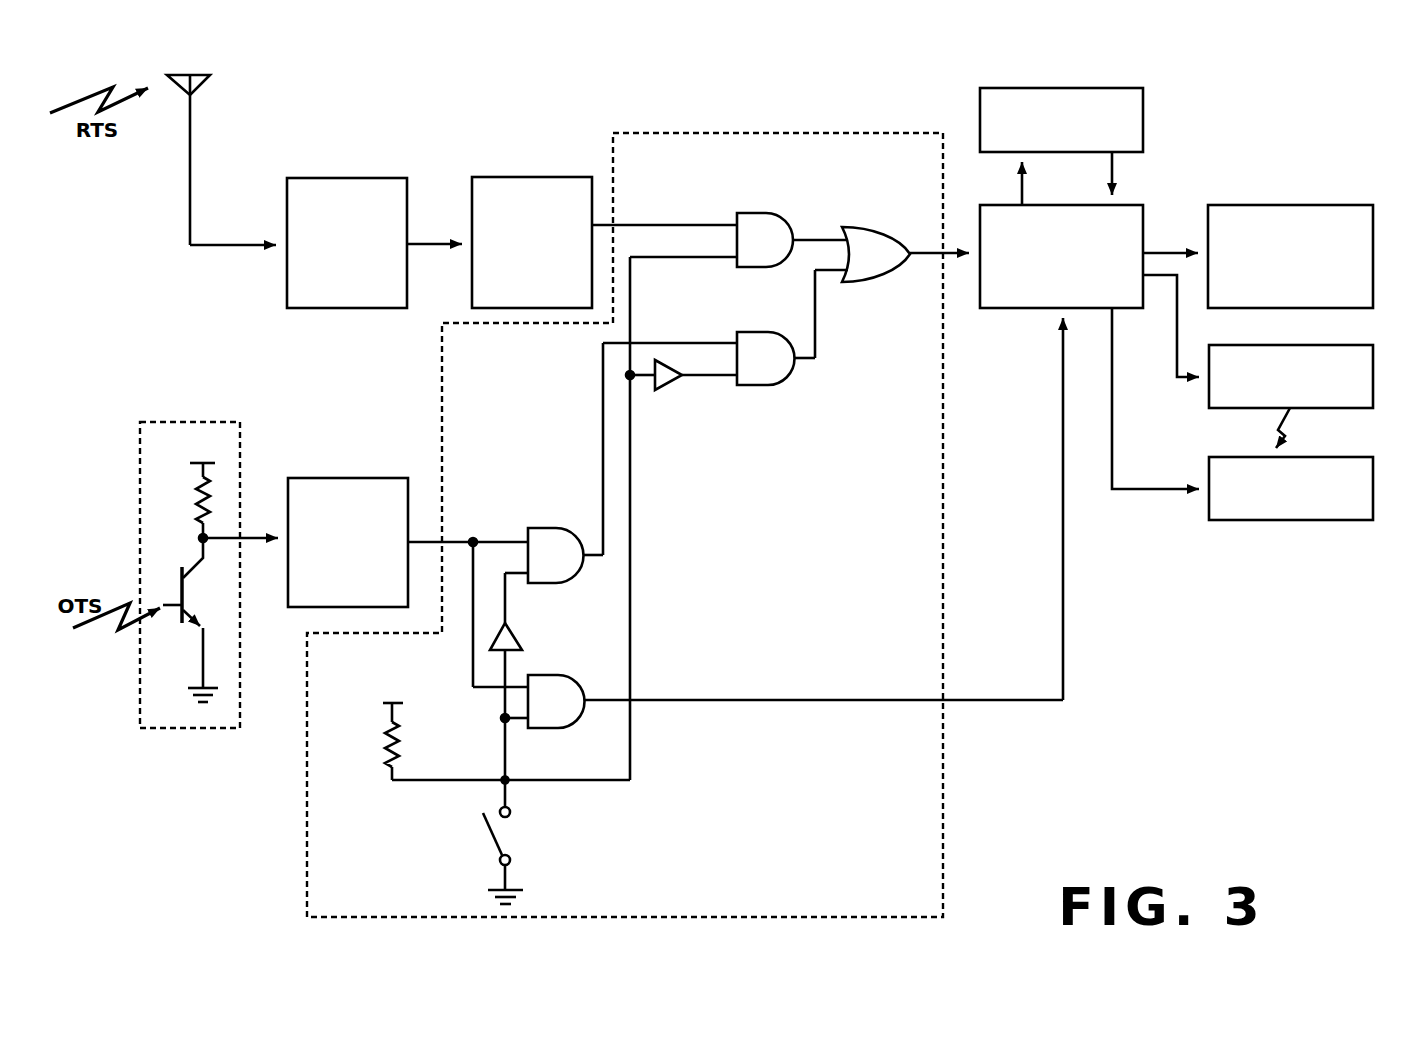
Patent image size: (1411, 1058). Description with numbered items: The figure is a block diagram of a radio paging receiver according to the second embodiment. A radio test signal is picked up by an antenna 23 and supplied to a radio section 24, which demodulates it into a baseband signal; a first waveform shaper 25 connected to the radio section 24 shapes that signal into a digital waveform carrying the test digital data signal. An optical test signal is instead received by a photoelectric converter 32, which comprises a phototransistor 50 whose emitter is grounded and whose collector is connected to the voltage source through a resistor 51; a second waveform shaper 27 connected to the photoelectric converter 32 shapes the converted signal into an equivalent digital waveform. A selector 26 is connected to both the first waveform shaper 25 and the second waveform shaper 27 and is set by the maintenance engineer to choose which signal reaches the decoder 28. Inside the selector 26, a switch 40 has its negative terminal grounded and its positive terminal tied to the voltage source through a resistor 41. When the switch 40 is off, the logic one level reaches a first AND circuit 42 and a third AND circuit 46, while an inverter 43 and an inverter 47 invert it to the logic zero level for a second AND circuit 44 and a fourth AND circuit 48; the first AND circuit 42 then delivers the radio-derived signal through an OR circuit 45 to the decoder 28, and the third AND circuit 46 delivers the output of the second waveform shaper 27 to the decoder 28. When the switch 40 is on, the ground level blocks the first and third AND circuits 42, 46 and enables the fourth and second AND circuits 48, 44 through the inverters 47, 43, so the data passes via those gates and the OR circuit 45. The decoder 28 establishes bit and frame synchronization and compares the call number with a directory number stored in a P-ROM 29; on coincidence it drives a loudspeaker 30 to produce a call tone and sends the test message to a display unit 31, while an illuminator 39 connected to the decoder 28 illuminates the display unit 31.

The antenna 23 is at (203, 87).
The radio section 24 is at (323, 178).
The first waveform shaper 25 is at (510, 177).
The selector 26 is at (813, 133).
The second waveform shaper 27 is at (325, 478).
The decoder 28 is at (1125, 205).
The P-ROM 29 is at (1145, 117).
The loudspeaker 30 is at (1258, 205).
The display unit 31 is at (1305, 520).
The photoelectric converter 32 is at (140, 702).
The illuminator 39 is at (1300, 408).
The switch 40 is at (512, 838).
The resistor 41 is at (382, 755).
The first AND circuit 42 is at (760, 213).
The inverter 43 is at (670, 392).
The second AND circuit 44 is at (760, 387).
The OR circuit 45 is at (870, 283).
The third AND circuit 46 is at (548, 730).
The inverter 47 is at (522, 636).
The fourth AND circuit 48 is at (548, 528).
The phototransistor 50 is at (191, 603).
The resistor 51 is at (196, 500).